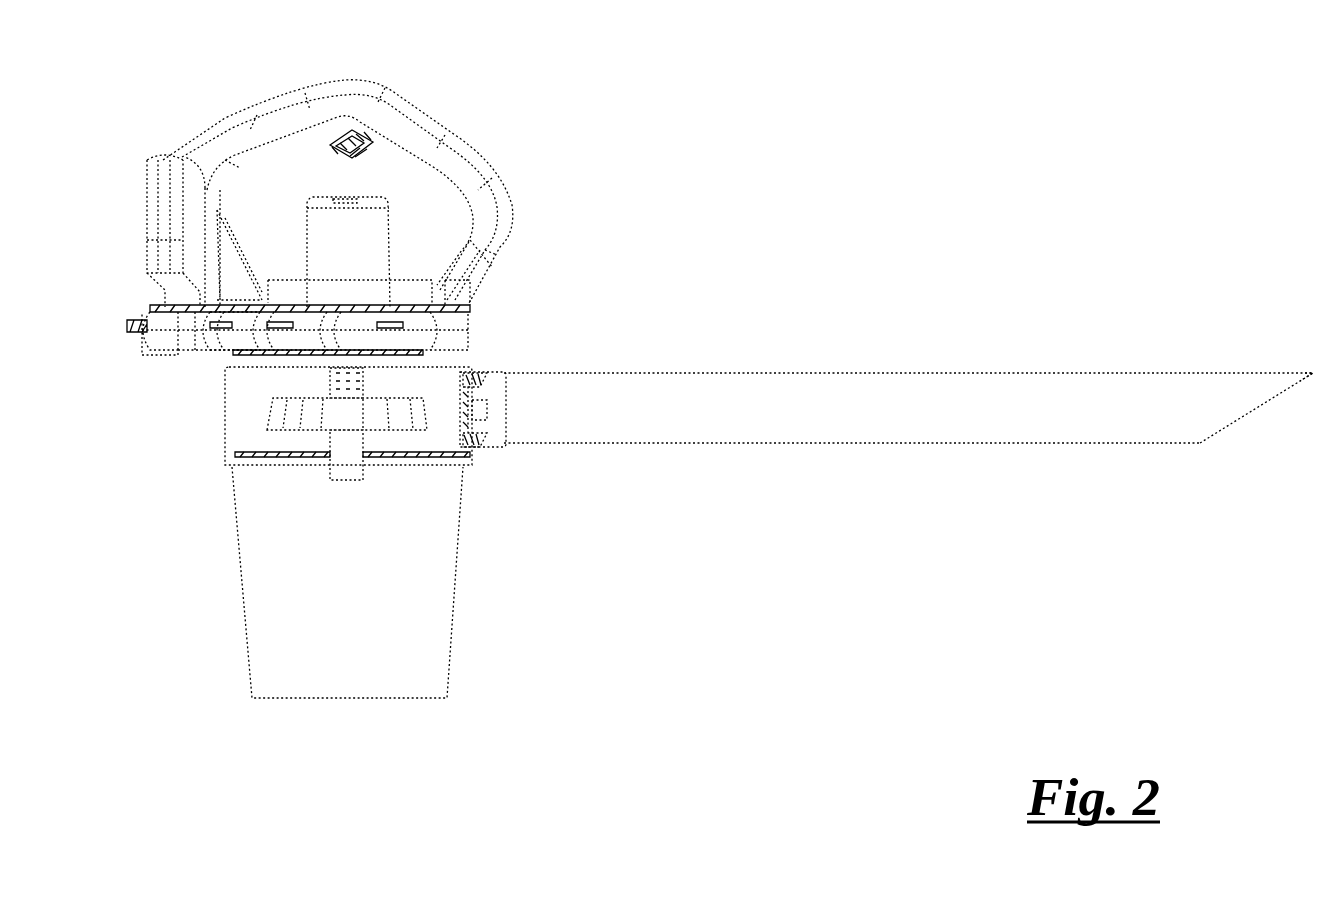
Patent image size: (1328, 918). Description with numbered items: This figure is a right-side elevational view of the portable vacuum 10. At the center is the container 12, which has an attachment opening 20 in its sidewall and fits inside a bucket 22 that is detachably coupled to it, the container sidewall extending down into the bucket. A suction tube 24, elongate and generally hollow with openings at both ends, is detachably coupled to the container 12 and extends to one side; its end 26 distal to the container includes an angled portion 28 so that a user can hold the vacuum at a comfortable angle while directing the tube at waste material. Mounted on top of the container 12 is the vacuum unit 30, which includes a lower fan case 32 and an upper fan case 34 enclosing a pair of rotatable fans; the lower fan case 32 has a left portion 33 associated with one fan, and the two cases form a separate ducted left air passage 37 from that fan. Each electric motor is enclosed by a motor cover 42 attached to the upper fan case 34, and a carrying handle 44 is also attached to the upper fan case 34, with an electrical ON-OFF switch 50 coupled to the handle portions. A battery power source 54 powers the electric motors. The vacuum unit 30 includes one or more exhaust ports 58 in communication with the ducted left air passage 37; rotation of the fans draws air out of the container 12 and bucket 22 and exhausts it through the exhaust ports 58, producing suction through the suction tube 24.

The portable vacuum 10 is at (549, 108).
The container 12 is at (225, 433).
The attachment opening 20 is at (492, 448).
The bucket 22 is at (453, 613).
The suction tube 24 is at (874, 373).
The end of suction tube 26 is at (1314, 376).
The angled portion 28 is at (1255, 412).
The vacuum unit 30 is at (157, 378).
The lower fan case 32 is at (468, 338).
The left portion 33 is at (430, 351).
The upper fan case 34 is at (468, 311).
The ducted left air passage 37 is at (233, 345).
The motor cover 42 is at (305, 258).
The carrying handle 44 is at (264, 97).
The electrical ON-OFF switch 50 is at (330, 160).
The battery power source 54 is at (147, 220).
The exhaust port 58 is at (162, 356).